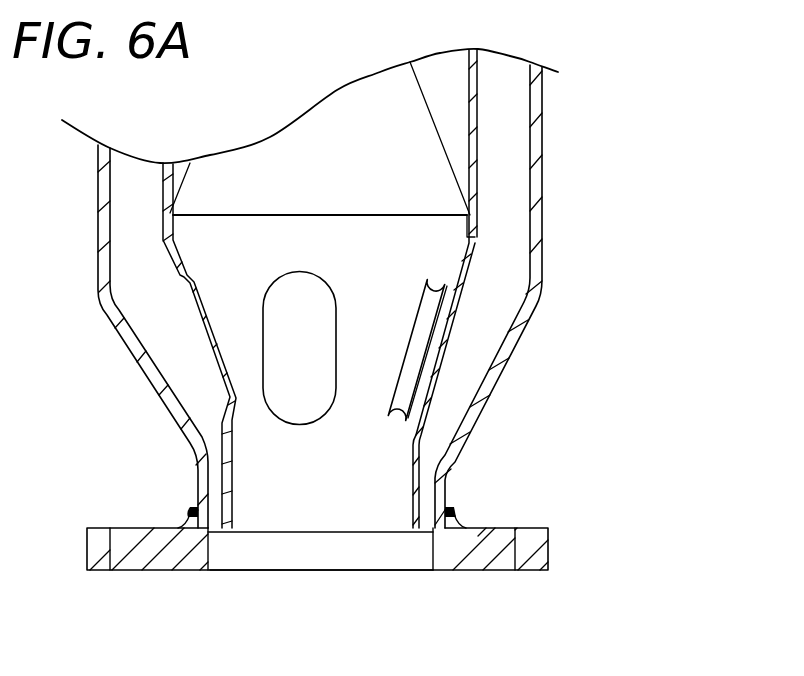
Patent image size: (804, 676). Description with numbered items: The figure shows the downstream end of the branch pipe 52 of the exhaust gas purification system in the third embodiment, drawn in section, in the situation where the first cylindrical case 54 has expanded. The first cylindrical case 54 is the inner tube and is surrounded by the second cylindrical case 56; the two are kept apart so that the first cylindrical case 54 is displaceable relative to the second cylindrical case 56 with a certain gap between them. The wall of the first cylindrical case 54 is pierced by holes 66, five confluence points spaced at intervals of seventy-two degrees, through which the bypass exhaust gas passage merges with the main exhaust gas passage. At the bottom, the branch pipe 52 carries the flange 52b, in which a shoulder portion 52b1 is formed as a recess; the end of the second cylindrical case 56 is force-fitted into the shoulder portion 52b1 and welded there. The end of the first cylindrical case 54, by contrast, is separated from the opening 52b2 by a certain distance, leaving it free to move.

The branch pipe 52 is at (552, 129).
The first cylindrical case 54 is at (463, 256).
The second cylindrical case 56 is at (543, 282).
The holes 66 is at (397, 415).
The flange 52b is at (540, 528).
The shoulder portion 52b1 is at (432, 546).
The opening 52b2 is at (433, 558).